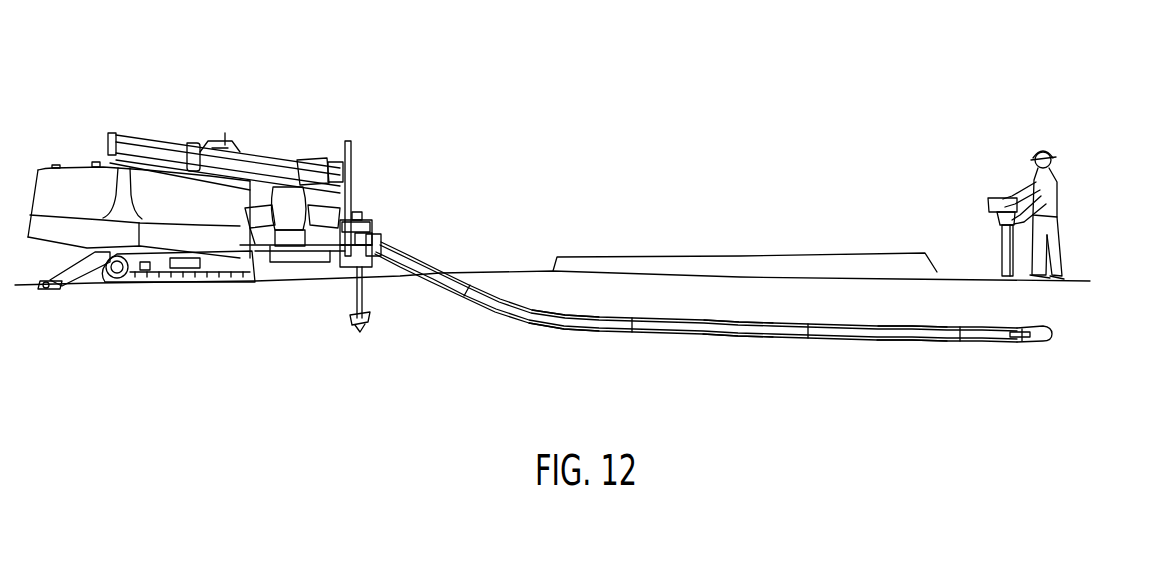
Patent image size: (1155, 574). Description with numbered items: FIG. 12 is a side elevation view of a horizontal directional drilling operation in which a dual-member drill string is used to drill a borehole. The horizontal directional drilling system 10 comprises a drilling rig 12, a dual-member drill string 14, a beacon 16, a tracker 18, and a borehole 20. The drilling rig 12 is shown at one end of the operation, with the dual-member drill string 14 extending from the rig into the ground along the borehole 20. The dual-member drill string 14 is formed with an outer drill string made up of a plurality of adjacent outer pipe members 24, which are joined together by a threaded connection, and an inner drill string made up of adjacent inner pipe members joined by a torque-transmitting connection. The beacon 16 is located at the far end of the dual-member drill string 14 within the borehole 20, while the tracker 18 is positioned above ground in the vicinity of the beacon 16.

The horizontal directional drilling system 10 is at (470, 62).
The drilling rig 12 is at (160, 142).
The dual-member drill string 14 is at (747, 309).
The beacon 16 is at (1022, 342).
The tracker 18 is at (994, 198).
The borehole 20 is at (910, 341).
The outer pipe members 24 is at (562, 325).